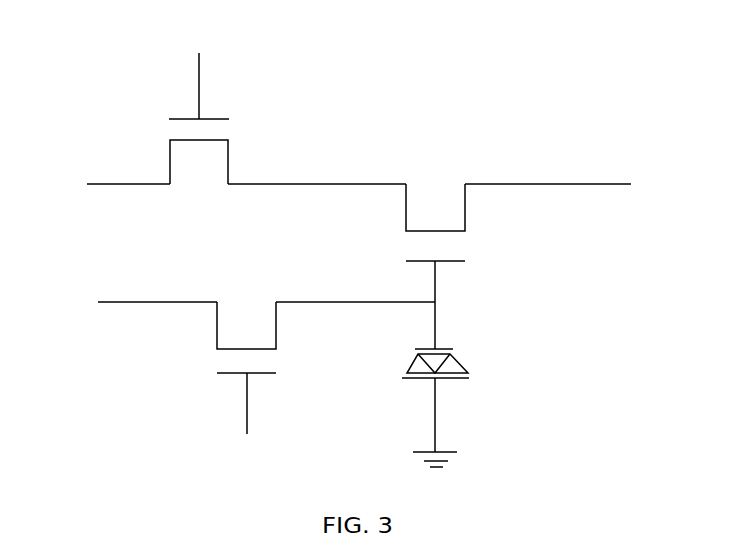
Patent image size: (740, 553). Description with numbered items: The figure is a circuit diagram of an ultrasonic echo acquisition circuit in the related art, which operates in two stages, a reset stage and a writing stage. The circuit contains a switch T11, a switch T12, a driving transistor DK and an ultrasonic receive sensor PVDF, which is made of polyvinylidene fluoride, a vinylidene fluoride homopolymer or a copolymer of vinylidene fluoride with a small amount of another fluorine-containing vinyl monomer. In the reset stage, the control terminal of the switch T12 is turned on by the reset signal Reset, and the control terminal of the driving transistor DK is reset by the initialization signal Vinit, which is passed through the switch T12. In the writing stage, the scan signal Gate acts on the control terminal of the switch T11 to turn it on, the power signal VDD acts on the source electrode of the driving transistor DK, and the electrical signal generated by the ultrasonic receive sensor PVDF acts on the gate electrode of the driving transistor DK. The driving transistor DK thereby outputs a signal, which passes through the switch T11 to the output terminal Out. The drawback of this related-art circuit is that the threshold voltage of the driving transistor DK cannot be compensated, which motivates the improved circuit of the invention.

The switch T11 is at (199, 168).
The switch T12 is at (246, 331).
The driving transistor DK is at (435, 219).
The ultrasonic receive sensor PVDF is at (478, 385).
The scan signal Gate is at (200, 71).
The output terminal Out is at (100, 187).
The power signal VDD is at (581, 183).
The initialization signal Vinit is at (121, 304).
The reset signal Reset is at (248, 417).